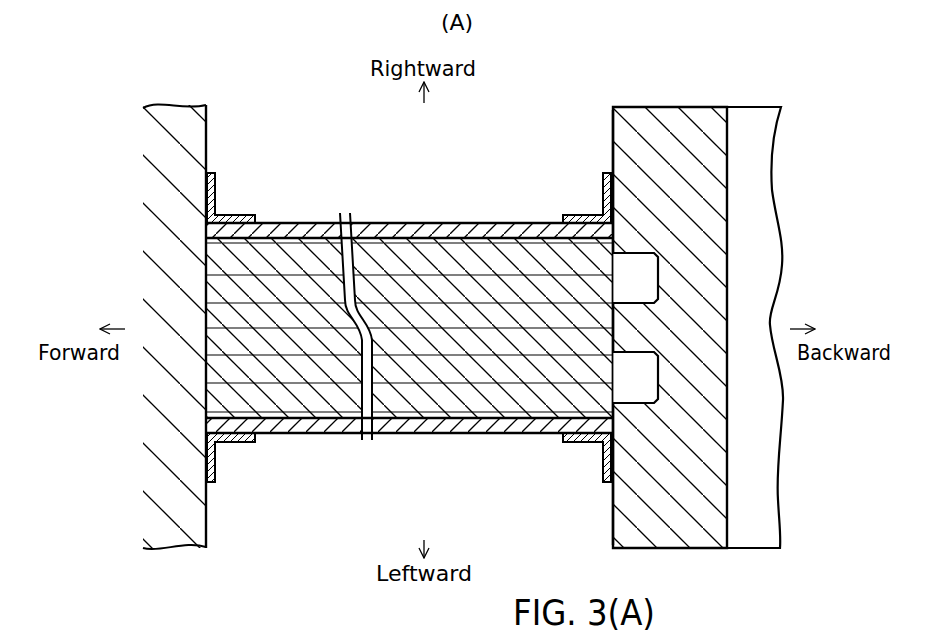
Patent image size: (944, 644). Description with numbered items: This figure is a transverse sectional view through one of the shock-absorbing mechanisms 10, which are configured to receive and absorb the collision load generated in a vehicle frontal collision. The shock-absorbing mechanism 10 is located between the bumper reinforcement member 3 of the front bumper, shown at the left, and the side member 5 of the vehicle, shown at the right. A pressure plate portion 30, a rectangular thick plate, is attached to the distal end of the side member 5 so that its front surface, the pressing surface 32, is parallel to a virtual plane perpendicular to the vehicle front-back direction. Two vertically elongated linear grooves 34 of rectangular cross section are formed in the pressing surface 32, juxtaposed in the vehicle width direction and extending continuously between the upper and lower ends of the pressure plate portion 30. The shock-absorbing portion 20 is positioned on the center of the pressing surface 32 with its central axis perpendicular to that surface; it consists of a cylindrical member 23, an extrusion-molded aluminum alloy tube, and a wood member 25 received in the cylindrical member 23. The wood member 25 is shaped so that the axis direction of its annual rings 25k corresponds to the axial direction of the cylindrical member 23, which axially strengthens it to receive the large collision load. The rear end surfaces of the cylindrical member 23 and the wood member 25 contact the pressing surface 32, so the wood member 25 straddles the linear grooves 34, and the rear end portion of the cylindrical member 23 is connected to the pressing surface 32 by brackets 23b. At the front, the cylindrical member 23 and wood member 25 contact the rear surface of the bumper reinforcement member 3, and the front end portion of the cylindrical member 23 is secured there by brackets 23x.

The bumper reinforcement member 3 is at (186, 414).
The side member 5 is at (752, 128).
The shock-absorbing mechanism 10 is at (543, 147).
The shock-absorbing portion 20 is at (401, 210).
The cylindrical member 23 is at (409, 315).
The bracket 23x is at (240, 215).
The bracket 23b is at (585, 215).
The wood member 25 is at (400, 346).
The annual rings 25k is at (500, 380).
The pressure plate portion 30 is at (675, 101).
The pressing surface 32 is at (610, 116).
The linear groove 34 is at (650, 276).